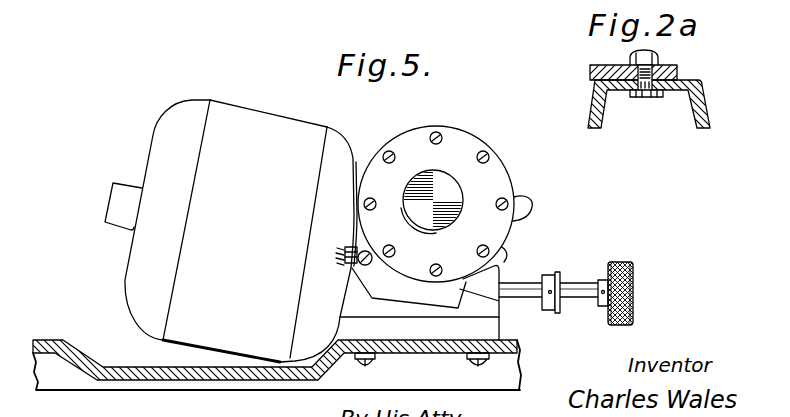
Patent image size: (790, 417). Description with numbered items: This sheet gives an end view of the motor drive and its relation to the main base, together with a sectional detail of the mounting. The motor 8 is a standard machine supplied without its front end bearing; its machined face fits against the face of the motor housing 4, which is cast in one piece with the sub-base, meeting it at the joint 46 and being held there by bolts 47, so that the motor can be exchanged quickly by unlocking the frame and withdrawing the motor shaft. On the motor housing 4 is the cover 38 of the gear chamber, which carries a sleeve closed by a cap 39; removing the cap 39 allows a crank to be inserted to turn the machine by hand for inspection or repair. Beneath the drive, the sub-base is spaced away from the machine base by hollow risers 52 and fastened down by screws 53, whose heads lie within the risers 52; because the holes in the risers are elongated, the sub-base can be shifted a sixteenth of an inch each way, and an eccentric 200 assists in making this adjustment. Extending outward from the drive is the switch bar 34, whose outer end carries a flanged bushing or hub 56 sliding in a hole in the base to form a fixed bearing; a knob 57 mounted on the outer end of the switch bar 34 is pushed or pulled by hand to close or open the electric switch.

In FIG. 5, the motor 8 is at (258, 124).
In FIG. 5, the joint 46 is at (318, 236).
In FIG. 5, the motor housing 4 is at (352, 149).
In FIG. 5, the cover of the gear chamber 38 is at (493, 173).
In FIG. 5, the cap 39 is at (458, 214).
In FIG. 5, the bolts 47 is at (343, 268).
In FIG. 5, the screws 53 is at (363, 366).
In FIG. 5, the switch bar 34 is at (582, 287).
In FIG. 5, the flanged bushing or hub 56 is at (552, 275).
In FIG. 5, the knob 57 is at (634, 290).
In FIG. 2A, the eccentric 200 is at (645, 92).
In FIG. 2A, the hollow risers 52 is at (692, 118).